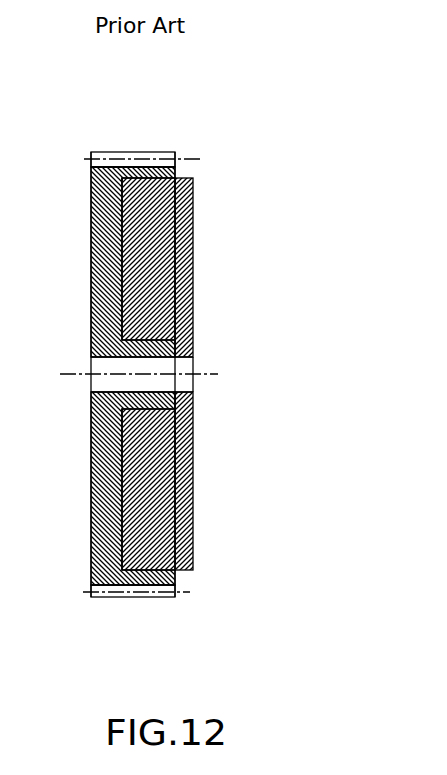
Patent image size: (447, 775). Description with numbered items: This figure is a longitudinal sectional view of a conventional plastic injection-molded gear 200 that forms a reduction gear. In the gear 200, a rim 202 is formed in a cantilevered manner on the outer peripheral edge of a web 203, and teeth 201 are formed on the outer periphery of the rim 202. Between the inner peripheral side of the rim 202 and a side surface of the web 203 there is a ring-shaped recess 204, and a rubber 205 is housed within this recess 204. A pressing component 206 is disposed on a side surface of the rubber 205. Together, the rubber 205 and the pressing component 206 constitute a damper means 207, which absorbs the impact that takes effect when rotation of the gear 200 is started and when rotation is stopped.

The plastic injection-molded gear 200 is at (189, 134).
The teeth 201 is at (108, 152).
The rim 202 is at (143, 170).
The web 203 is at (91, 243).
The ring-shaped recess 204 is at (125, 311).
The rubber 205 is at (194, 264).
The pressing component 206 is at (194, 283).
The damper means 207 is at (270, 250).